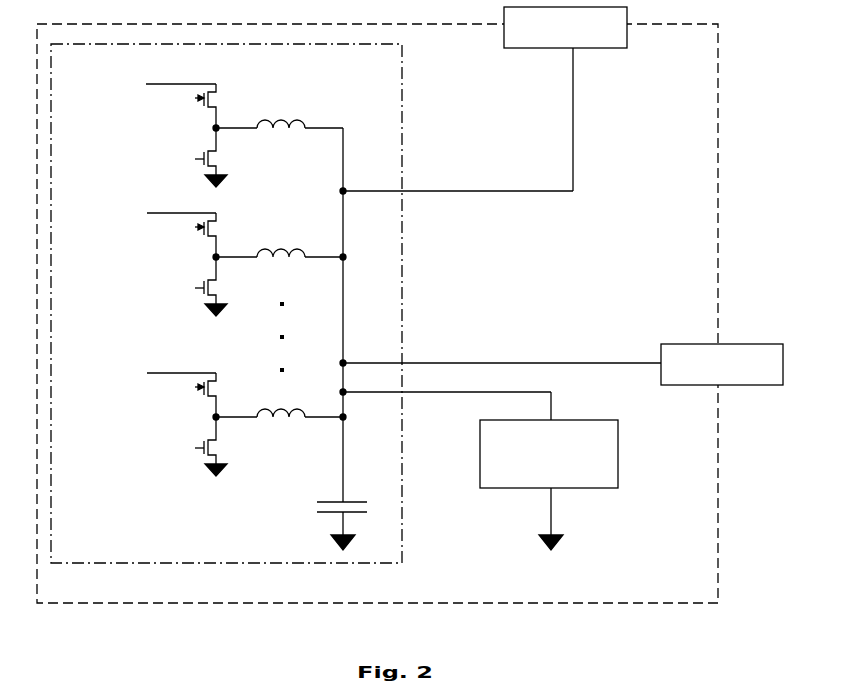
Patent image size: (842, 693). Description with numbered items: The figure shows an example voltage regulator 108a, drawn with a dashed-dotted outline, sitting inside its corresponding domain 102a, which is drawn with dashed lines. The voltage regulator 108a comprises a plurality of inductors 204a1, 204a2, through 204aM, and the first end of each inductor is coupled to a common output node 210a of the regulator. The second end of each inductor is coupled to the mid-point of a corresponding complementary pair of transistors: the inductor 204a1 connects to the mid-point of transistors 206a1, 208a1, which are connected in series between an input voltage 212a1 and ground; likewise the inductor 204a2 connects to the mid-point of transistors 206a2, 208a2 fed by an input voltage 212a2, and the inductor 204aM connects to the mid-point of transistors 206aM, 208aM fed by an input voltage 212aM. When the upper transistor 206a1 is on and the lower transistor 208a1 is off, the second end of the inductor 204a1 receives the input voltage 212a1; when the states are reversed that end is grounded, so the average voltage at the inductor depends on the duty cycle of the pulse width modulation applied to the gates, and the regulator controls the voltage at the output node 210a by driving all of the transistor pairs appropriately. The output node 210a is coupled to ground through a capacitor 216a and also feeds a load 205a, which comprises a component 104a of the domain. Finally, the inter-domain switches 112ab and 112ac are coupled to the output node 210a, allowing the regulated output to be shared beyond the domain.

The domain 102a is at (698, 72).
The voltage regulator 108a is at (398, 141).
The switch 112ac is at (485, 99).
The switch 112ab is at (563, 364).
The output node 210a is at (344, 362).
The load 205a is at (480, 471).
The component 104a is at (480, 471).
The capacitor 216a is at (317, 525).
The input voltage 212a1 is at (137, 74).
The transistor 206a1 is at (188, 107).
The transistor 208a1 is at (189, 157).
The inductor 204a1 is at (279, 109).
The input voltage 212a2 is at (140, 208).
The transistor 206a2 is at (186, 236).
The transistor 208a2 is at (187, 286).
The inductor 204a2 is at (279, 236).
The input voltage 212aM is at (139, 368).
The transistor 206aM is at (182, 396).
The transistor 208aM is at (182, 446).
The inductor 204aM is at (279, 424).